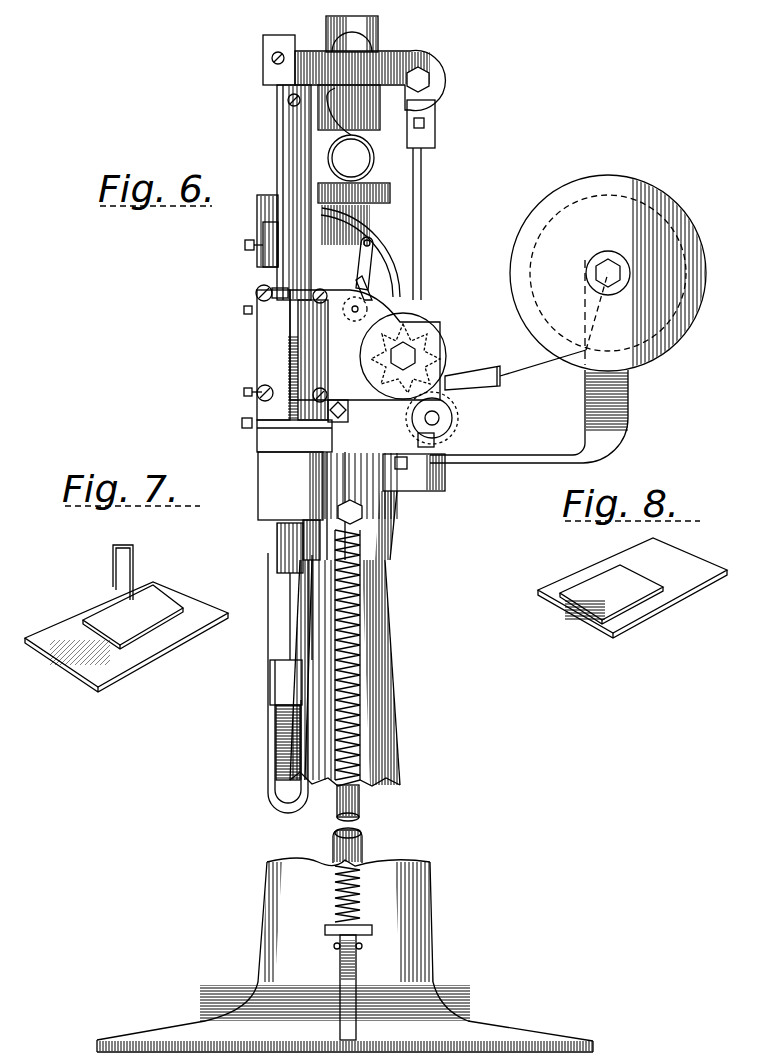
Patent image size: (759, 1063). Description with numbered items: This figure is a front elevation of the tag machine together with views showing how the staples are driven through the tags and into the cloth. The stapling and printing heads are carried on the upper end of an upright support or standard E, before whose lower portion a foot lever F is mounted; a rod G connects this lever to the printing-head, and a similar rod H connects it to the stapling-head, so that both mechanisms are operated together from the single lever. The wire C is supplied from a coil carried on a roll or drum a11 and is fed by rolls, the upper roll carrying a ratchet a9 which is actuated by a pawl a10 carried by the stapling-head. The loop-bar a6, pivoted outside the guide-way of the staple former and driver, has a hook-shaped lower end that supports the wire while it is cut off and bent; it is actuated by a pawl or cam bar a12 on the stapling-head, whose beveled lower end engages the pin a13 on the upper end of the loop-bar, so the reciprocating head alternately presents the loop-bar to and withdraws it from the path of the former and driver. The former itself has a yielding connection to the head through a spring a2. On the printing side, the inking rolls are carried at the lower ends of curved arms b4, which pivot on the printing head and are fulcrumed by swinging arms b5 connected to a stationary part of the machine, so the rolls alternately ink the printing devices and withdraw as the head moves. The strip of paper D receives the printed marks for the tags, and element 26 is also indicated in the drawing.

The pawl or cam bar a12 is at (282, 133).
The spring a2 is at (345, 146).
The pawl a10 is at (415, 245).
The swinging arms b5 is at (366, 262).
The arms b4 is at (392, 278).
The ratchet a9 is at (432, 328).
The pin a13 is at (256, 296).
The loop-bar a6 is at (290, 408).
The roll or drum a11 is at (590, 185).
The wire C is at (527, 372).
The guide roller nut 26 is at (440, 436).
The strip of paper D is at (268, 547).
The rod G is at (358, 672).
The rod H is at (360, 798).
The upright support or standard E is at (400, 882).
The foot lever F is at (348, 960).